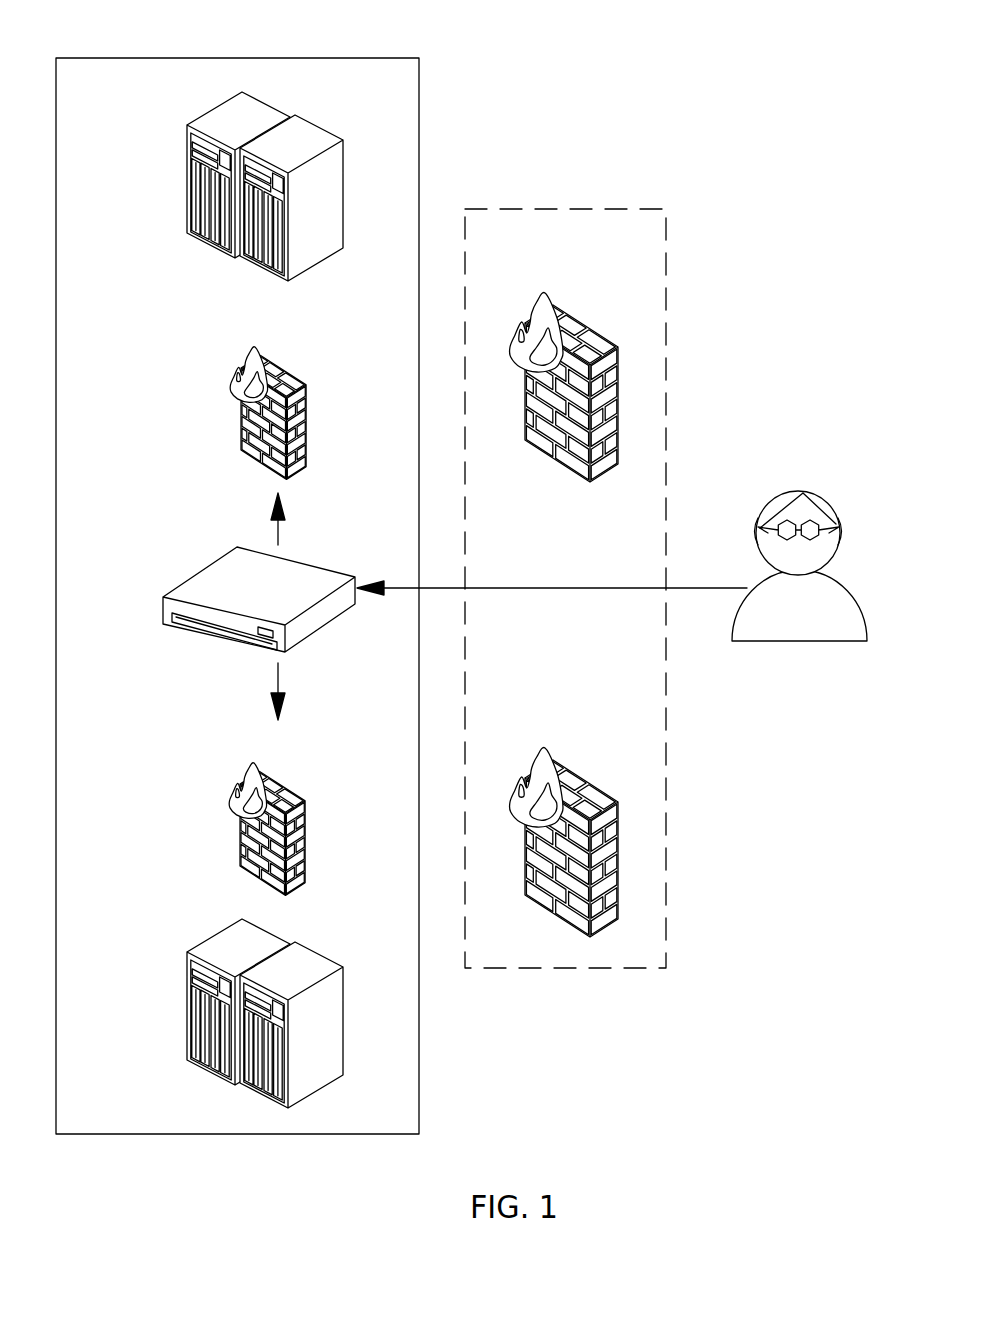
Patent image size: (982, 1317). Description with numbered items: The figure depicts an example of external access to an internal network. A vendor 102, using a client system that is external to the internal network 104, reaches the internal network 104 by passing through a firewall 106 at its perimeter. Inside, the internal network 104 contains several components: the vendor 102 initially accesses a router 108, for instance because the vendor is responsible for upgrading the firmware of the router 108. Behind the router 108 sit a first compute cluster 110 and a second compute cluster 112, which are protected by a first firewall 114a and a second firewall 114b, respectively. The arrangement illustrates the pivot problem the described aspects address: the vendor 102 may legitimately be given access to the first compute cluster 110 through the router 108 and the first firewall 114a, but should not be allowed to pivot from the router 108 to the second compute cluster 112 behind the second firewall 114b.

The vendor 102 is at (800, 491).
The internal network 104 is at (240, 58).
The firewall 106 is at (568, 209).
The router 108 is at (163, 607).
The first compute cluster 110 is at (187, 176).
The second compute cluster 112 is at (187, 1012).
The first firewall 114a is at (231, 393).
The second firewall 114b is at (232, 789).